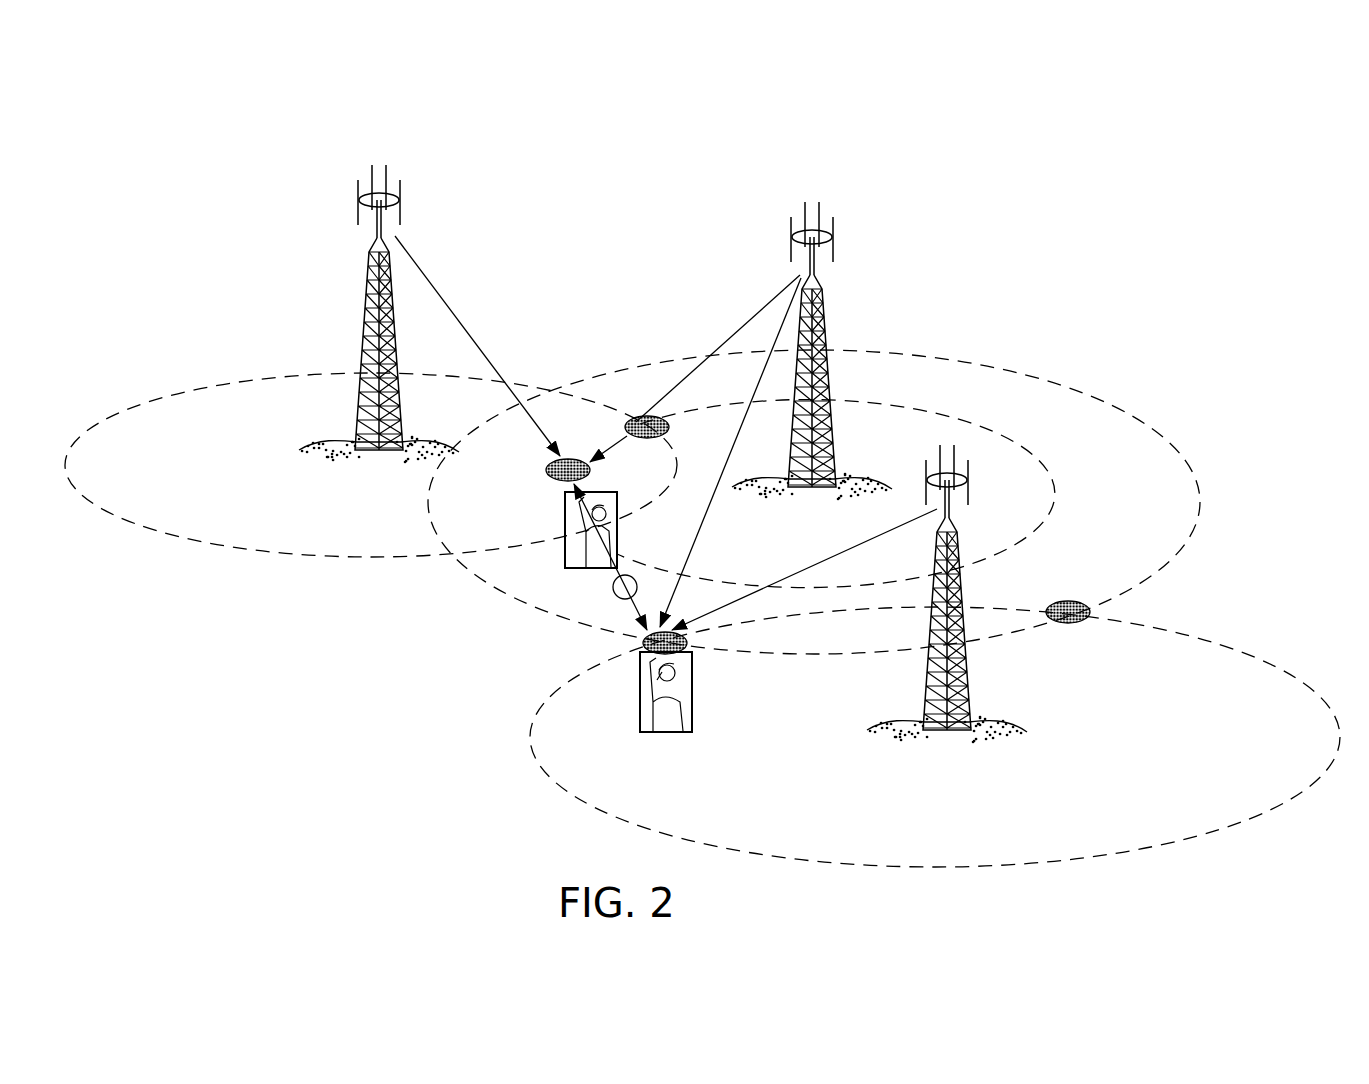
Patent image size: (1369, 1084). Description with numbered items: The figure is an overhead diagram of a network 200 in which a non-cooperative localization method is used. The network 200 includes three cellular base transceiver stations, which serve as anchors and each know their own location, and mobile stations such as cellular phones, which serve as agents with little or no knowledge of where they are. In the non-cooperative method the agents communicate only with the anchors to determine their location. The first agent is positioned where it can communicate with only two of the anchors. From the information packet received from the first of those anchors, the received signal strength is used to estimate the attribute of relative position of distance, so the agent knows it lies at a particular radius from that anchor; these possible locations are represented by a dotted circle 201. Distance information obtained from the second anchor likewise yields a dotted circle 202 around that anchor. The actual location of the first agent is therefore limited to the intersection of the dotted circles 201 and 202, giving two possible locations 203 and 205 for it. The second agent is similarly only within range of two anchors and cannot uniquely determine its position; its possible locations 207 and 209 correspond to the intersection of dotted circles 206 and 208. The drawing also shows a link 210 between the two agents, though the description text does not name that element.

The network 200 is at (834, 116).
The dotted circle 201 is at (334, 560).
The dotted circle 202 is at (924, 410).
The possible location 203 is at (546, 474).
The possible location 205 is at (650, 438).
The dotted circle 206 is at (1042, 378).
The possible location 207 is at (688, 649).
The dotted circle 208 is at (957, 866).
The possible location 209 is at (1070, 624).
The relative position measurement between MS1 and MS2 210 is at (615, 598).